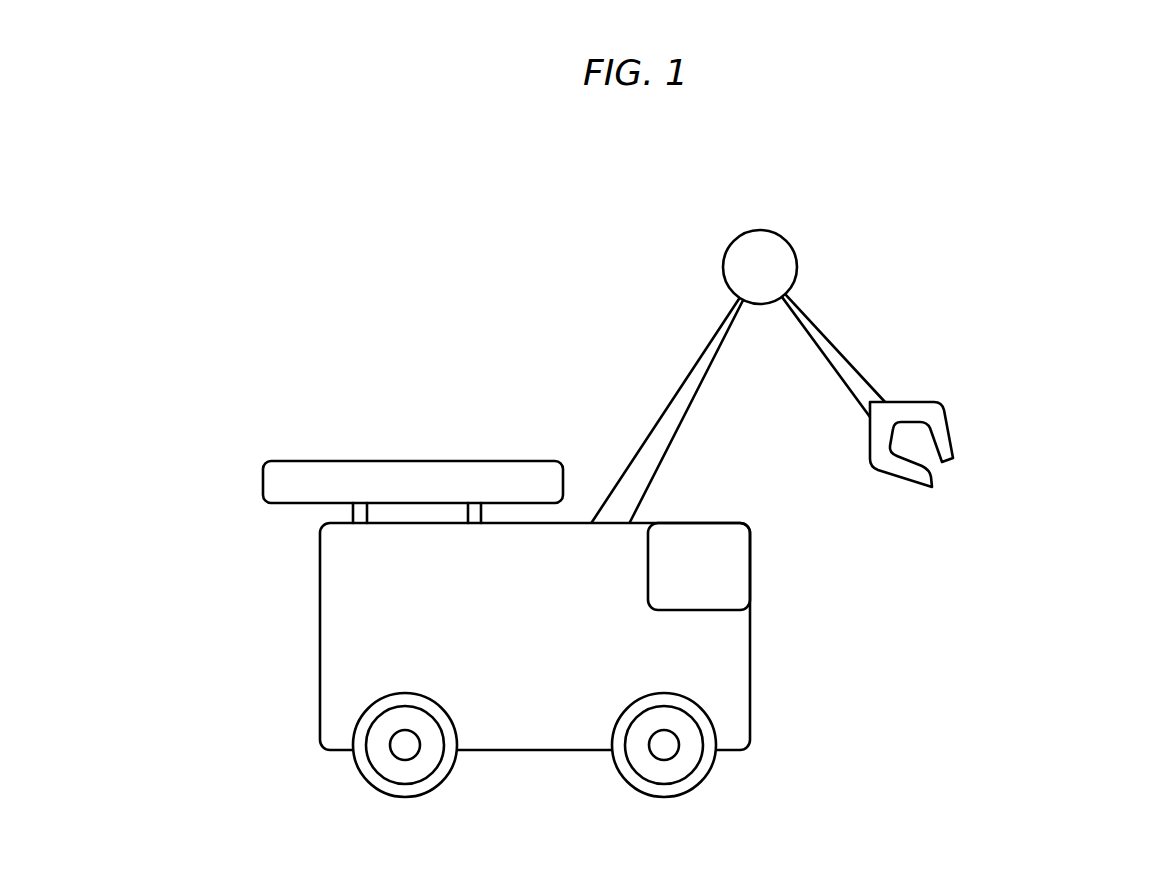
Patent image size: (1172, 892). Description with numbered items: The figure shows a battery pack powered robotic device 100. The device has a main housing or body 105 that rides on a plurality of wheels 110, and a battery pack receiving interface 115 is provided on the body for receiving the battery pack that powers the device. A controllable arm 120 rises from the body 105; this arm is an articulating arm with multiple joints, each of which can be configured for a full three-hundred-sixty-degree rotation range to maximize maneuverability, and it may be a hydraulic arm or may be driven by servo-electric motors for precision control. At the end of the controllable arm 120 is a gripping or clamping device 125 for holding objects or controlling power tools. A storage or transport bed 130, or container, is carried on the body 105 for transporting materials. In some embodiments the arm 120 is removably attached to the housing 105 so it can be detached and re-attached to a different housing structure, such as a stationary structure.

The battery pack powered robotic device 100 is at (1048, 94).
The main housing or body 105 is at (320, 617).
The wheels 110 is at (443, 774).
The battery pack receiving interface 115 is at (750, 571).
The controllable arm 120 is at (665, 392).
The gripping or clamping device 125 is at (947, 424).
The storage/transport bed 130 is at (263, 476).